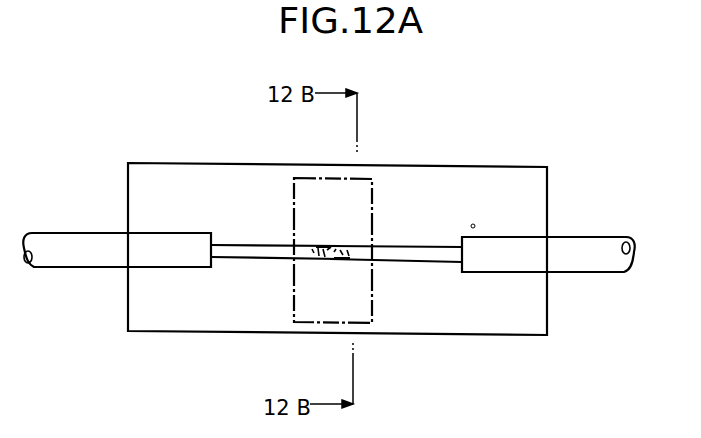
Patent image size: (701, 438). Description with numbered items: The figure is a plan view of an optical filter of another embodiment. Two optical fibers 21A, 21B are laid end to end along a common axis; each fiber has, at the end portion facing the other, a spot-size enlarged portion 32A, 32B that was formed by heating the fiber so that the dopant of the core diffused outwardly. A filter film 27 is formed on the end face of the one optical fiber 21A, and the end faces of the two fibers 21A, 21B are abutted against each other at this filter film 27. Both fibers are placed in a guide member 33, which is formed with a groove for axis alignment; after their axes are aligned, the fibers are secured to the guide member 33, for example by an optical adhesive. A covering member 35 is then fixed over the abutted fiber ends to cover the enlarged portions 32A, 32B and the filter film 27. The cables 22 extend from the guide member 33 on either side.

The optical fiber cable 22 is at (92, 242).
The guide member 33 is at (538, 203).
The covering member 35 is at (373, 193).
The filter film 27 is at (328, 248).
The optical fiber 21A is at (438, 257).
The optical fiber 21B is at (232, 252).
The spot-size enlarged portion 32A is at (337, 258).
The spot-size enlarged portion 32B is at (318, 258).